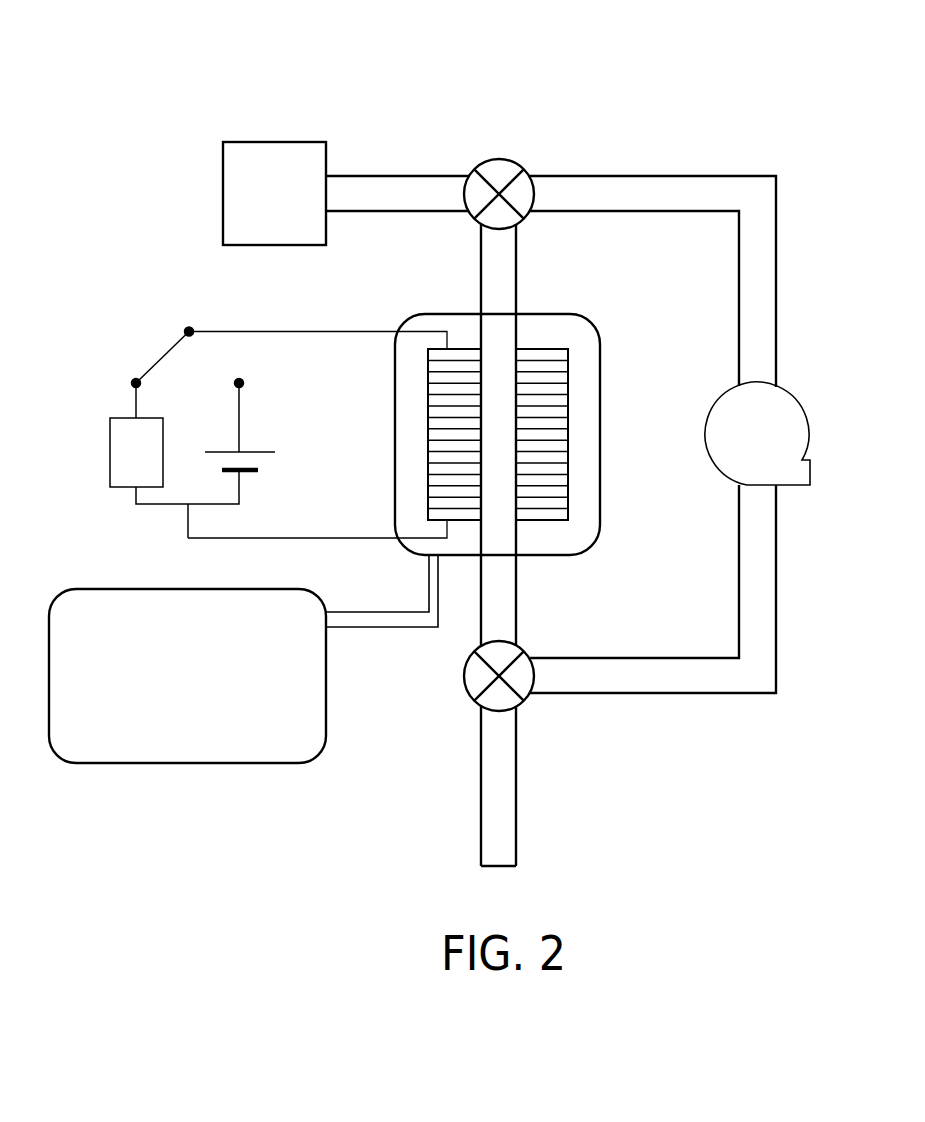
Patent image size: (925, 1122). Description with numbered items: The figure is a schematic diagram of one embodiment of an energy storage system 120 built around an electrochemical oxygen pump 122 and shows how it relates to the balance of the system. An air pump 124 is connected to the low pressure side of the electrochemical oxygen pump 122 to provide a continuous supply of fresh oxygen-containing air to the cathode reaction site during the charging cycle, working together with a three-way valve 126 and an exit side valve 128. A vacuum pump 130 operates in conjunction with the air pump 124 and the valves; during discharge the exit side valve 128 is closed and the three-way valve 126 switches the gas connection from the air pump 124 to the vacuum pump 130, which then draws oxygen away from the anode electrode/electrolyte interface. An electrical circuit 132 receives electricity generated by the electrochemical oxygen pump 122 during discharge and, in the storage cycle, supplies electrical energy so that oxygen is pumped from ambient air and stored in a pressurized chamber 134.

The energy storage system 120 is at (256, 52).
The electrochemical oxygen pump 122 is at (585, 367).
The air pump 124 is at (240, 168).
The 3-way valve 126 is at (495, 167).
The exit side valve 128 is at (515, 650).
The vacuum pump 130 is at (728, 463).
The electrical circuit 132 is at (150, 331).
The pressurized chamber 134 is at (310, 730).